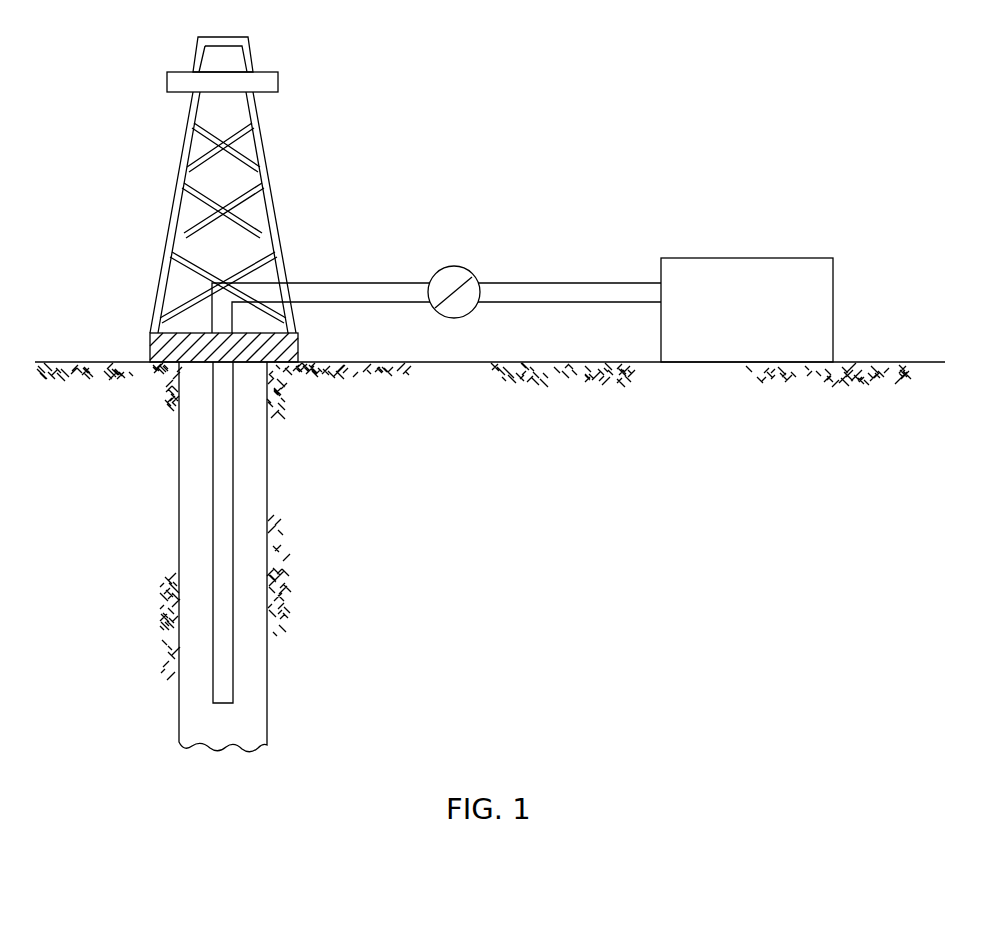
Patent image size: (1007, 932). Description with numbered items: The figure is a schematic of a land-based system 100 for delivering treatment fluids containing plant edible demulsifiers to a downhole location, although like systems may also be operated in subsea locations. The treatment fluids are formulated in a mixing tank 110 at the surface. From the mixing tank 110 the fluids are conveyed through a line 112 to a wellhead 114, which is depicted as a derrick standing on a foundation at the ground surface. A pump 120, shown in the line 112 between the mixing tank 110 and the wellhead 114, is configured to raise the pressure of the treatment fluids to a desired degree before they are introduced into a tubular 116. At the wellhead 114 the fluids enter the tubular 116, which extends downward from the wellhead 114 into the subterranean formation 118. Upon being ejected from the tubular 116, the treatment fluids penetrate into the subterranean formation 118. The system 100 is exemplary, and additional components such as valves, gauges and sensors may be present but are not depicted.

The system 100 is at (612, 80).
The mixing tank 110 is at (695, 258).
The line 112 is at (357, 283).
The wellhead 114 is at (150, 350).
The tubular 116 is at (233, 474).
The subterranean formation 118 is at (103, 572).
The pump 120 is at (451, 266).